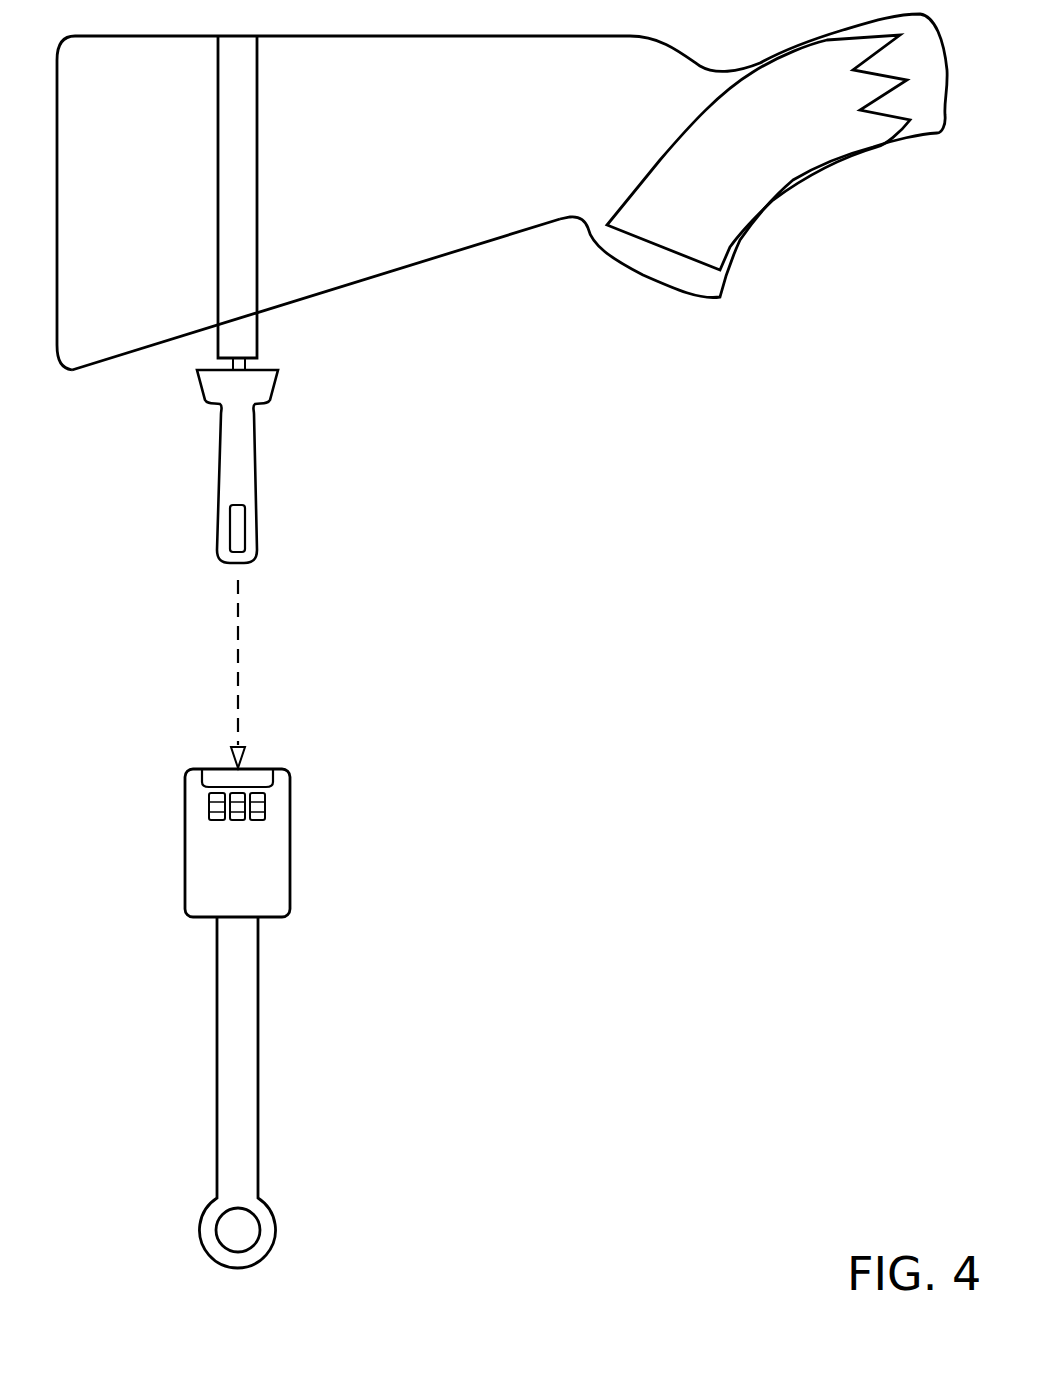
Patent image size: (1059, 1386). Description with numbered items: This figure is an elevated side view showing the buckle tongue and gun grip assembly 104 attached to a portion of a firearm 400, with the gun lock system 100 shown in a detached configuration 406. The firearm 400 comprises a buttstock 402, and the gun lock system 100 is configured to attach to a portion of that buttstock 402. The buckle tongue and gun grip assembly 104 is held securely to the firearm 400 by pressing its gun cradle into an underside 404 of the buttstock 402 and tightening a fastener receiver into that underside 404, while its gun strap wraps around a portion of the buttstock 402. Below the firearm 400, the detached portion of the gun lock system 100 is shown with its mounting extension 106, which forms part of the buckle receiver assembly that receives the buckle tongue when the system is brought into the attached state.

The gun lock system 100 is at (524, 1018).
The buckle tongue and gun grip assembly 104 is at (292, 463).
The mounting extension 106 is at (340, 1063).
The firearm 400 is at (502, 195).
The buttstock 402 is at (338, 262).
The underside 404 is at (288, 305).
The detached configuration 406 is at (237, 843).